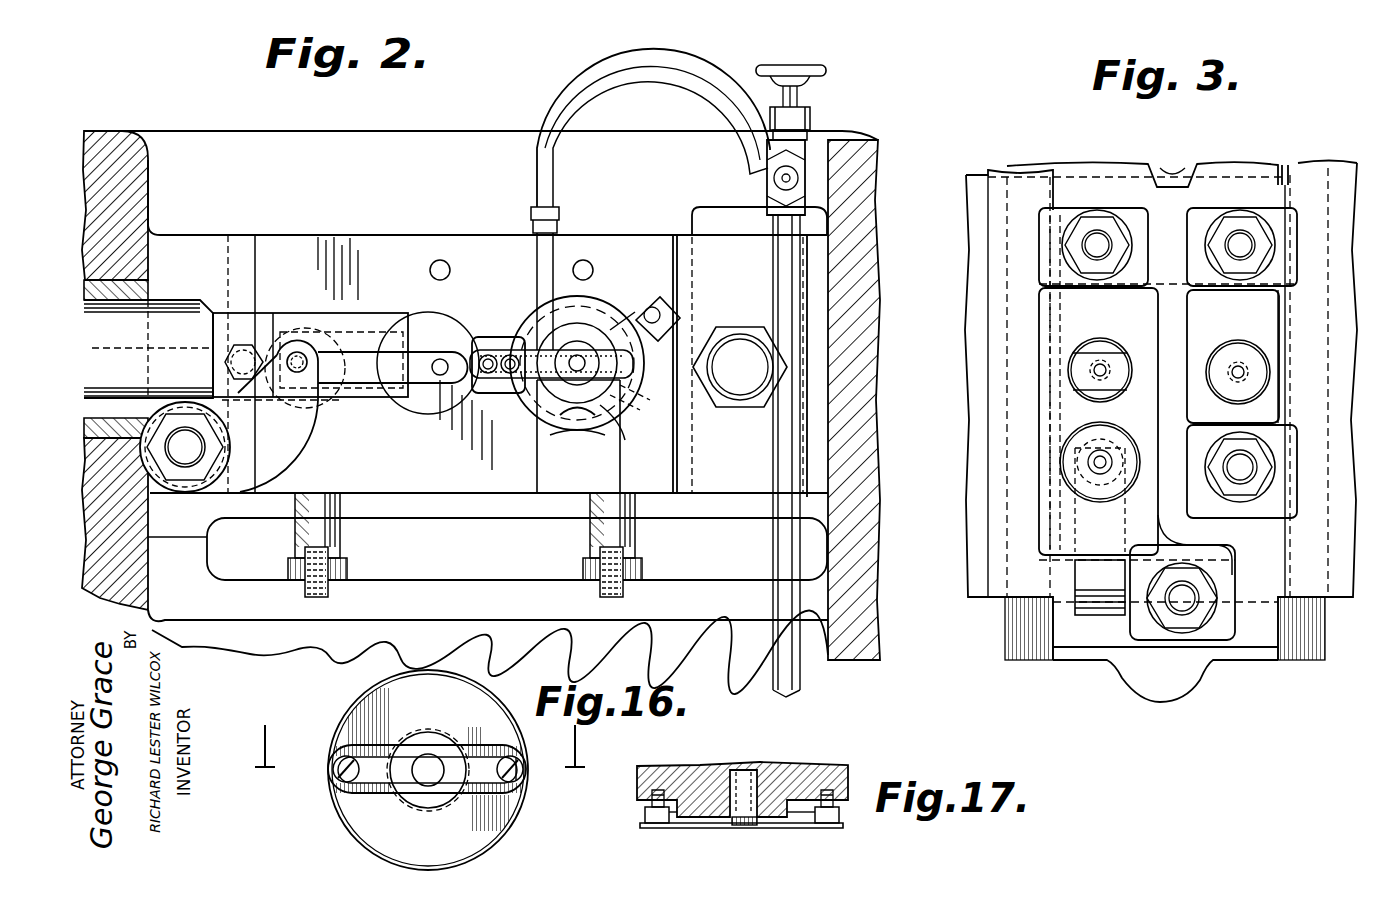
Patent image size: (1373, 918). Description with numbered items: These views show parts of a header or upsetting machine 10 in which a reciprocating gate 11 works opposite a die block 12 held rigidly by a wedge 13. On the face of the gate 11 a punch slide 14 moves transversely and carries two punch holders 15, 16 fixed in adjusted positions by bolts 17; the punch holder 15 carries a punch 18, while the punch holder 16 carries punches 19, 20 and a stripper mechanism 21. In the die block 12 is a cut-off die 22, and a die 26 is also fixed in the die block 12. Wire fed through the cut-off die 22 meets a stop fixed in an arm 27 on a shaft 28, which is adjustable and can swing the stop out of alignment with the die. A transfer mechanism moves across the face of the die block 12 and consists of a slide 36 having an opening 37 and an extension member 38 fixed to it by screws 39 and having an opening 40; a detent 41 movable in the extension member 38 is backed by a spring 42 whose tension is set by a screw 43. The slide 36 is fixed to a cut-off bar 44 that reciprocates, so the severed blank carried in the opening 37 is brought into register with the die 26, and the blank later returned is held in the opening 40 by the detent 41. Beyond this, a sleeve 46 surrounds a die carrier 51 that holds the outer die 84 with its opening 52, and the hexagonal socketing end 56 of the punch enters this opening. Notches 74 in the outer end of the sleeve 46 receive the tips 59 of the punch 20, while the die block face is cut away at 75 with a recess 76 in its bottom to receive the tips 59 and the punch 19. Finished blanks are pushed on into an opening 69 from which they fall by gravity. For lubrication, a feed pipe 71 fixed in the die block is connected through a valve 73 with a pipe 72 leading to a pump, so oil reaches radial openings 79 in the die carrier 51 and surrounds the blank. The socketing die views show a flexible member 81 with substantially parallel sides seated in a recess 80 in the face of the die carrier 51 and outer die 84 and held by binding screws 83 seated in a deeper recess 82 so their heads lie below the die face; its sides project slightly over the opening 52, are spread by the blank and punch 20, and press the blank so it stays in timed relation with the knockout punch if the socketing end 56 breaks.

In FIG. 2, the header or upsetting machine 10 is at (212, 129).
In FIG. 3, the reciprocating gate 11 is at (1330, 165).
In FIG. 2, the die block 12 is at (414, 498).
In FIG. 2, the wedge 13 is at (727, 482).
In FIG. 3, the punch slide 14 is at (1225, 163).
In FIG. 3, the punch holder 15 is at (1248, 514).
In FIG. 3, the punch holder 16 is at (1035, 515).
In FIG. 3, the bolts 17 is at (1235, 243).
In FIG. 16, the bolts 17 is at (423, 746).
In FIG. 3, the punch 18 is at (1236, 366).
In FIG. 3, the punch 19 is at (1103, 364).
In FIG. 3, the punch 20 is at (1075, 371).
In FIG. 3, the stripper mechanism 21 is at (1062, 462).
In FIG. 2, the cut-off die 22 is at (322, 345).
In FIG. 2, the die 26 is at (428, 312).
In FIG. 2, the arm 27 is at (285, 446).
In FIG. 2, the shaft 28 is at (185, 455).
In FIG. 2, the slide 36 is at (498, 394).
In FIG. 2, the opening 37 is at (437, 377).
In FIG. 2, the extension member 38 is at (590, 420).
In FIG. 2, the screws 39 is at (510, 355).
In FIG. 2, the opening 40 is at (577, 366).
In FIG. 2, the detent 41 is at (652, 308).
In FIG. 2, the spring 42 is at (620, 398).
In FIG. 2, the screw 43 is at (688, 345).
In FIG. 2, the cut-off bar 44 is at (165, 316).
In FIG. 2, the sleeve 46 is at (620, 440).
In FIG. 2, the die carrier 51 is at (555, 405).
In FIG. 16, the die carrier 51 is at (345, 808).
In FIG. 16, the opening 52 is at (420, 782).
In FIG. 17, the opening 52 is at (740, 770).
In FIG. 2, the hexagonal socketing end 56 is at (600, 345).
In FIG. 3, the tips 59 is at (1092, 352).
In FIG. 3, the opening 69 is at (1100, 590).
In FIG. 2, the feed pipe 71 is at (536, 174).
In FIG. 2, the pipe 72 is at (773, 599).
In FIG. 2, the valve 73 is at (800, 62).
In FIG. 2, the notches 74 is at (585, 355).
In FIG. 2, the cut-away portion 75 is at (596, 240).
In FIG. 2, the recess 76 is at (440, 262).
In FIG. 2, the radial openings 79 is at (545, 318).
In FIG. 16, the recess 80 is at (434, 748).
In FIG. 17, the recess 80 is at (785, 824).
In FIG. 2, the flexible member 81 is at (575, 354).
In FIG. 16, the flexible member 81 is at (402, 748).
In FIG. 17, the flexible member 81 is at (838, 824).
In FIG. 16, the recess 82 is at (528, 780).
In FIG. 17, the recess 82 is at (645, 812).
In FIG. 16, the binding screws 83 is at (337, 760).
In FIG. 17, the binding screws 83 is at (658, 824).
In FIG. 2, the outer die 84 is at (575, 428).
In FIG. 16, the outer die 84 is at (450, 800).
In FIG. 17, the outer die 84 is at (785, 775).